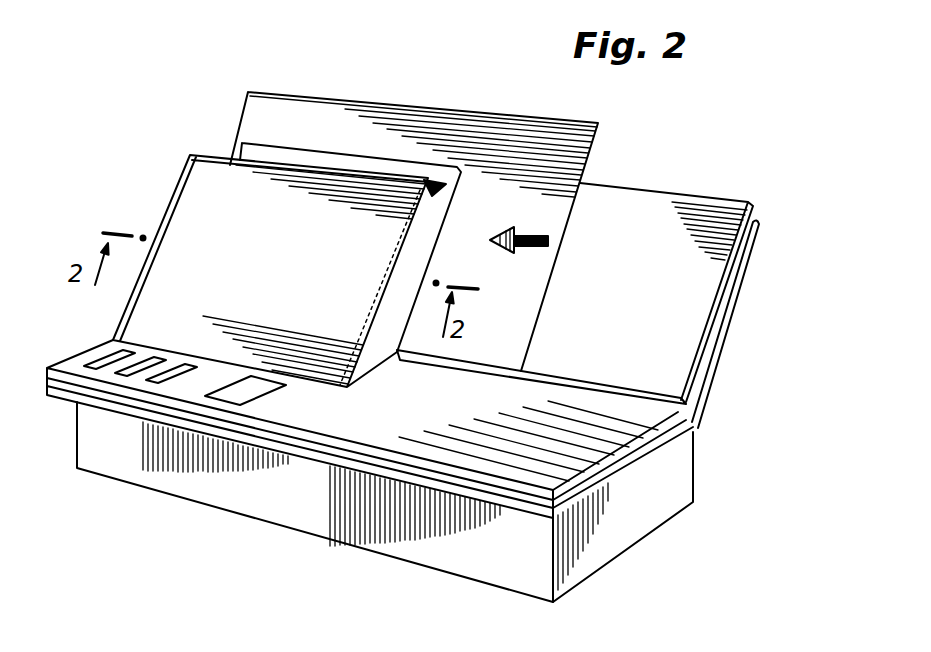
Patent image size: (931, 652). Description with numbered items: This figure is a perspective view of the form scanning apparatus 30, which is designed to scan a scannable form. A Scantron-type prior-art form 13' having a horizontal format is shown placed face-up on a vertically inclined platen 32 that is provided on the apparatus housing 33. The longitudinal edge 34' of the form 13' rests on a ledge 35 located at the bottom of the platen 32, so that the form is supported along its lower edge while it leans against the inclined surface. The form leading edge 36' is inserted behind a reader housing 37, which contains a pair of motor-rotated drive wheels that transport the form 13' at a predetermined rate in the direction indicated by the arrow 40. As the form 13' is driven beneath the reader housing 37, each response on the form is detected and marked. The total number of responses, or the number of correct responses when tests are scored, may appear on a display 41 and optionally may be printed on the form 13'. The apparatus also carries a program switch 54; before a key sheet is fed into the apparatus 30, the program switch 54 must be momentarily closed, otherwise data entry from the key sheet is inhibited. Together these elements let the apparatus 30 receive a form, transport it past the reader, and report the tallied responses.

The form scanning apparatus 30 is at (181, 93).
The scannable form 13' is at (414, 204).
The form leading edge 36' is at (309, 230).
The reader housing 37 is at (190, 203).
The platen 32 is at (690, 215).
The arrow 40 is at (548, 237).
The program switch 54 is at (100, 360).
The display 41 is at (258, 388).
The longitudinal edge 34' is at (541, 385).
The ledge 35 is at (655, 392).
The apparatus housing 33 is at (615, 428).